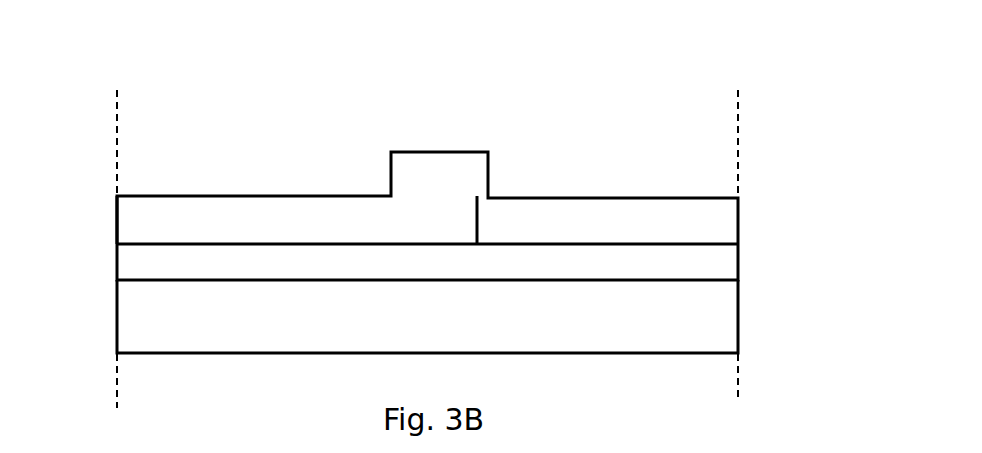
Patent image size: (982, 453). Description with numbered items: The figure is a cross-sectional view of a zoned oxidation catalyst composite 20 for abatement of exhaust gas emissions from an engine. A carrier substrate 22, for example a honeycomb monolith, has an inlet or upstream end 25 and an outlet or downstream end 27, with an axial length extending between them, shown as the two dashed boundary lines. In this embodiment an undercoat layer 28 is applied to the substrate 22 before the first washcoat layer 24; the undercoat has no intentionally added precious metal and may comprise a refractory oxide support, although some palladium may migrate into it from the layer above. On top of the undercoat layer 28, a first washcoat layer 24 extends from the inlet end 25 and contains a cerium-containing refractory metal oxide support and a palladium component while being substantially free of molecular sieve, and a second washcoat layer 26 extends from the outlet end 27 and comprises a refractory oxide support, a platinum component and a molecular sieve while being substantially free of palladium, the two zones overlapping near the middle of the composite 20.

The zoned oxidation catalyst composite 20 is at (454, 98).
The carrier substrate 22 is at (738, 328).
The first washcoat layer 24 is at (117, 220).
The inlet or upstream end 25 is at (117, 130).
The second washcoat layer 26 is at (473, 172).
The outlet or downstream end 27 is at (738, 110).
The undercoat layer 28 is at (738, 262).